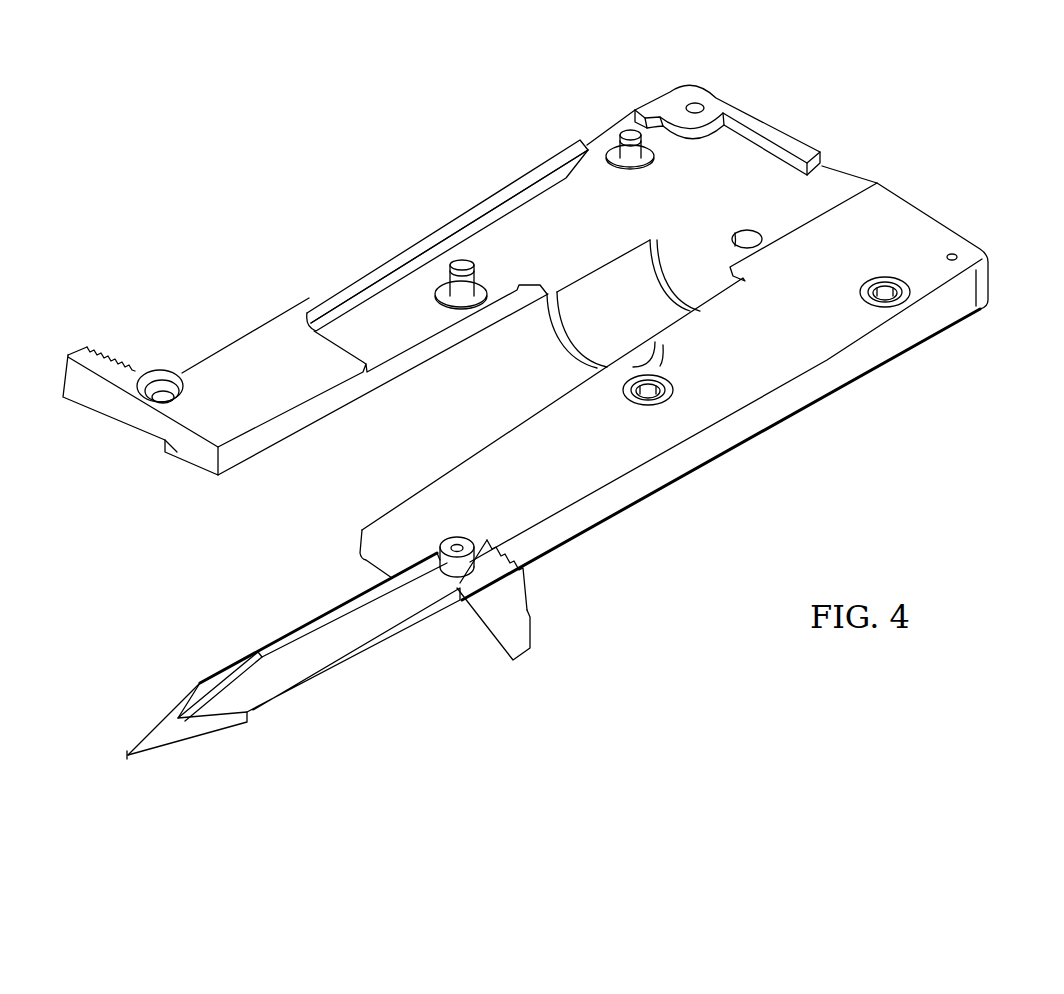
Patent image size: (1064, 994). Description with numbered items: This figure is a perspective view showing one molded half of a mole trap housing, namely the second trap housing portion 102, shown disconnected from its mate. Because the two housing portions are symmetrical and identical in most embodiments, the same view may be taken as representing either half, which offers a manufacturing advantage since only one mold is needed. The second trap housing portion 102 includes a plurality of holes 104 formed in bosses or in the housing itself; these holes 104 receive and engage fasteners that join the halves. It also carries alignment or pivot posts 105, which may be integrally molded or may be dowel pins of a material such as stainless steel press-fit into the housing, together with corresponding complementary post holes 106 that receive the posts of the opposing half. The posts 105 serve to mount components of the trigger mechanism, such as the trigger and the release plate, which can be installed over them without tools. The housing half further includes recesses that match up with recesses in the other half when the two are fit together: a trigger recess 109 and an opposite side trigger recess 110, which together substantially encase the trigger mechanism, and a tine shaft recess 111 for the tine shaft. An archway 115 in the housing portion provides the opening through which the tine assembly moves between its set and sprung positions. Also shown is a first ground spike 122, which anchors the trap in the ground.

The second trap housing portion 102 is at (765, 418).
The holes 104 is at (162, 393).
The alignment or pivot posts 105 is at (466, 284).
The post holes 106 is at (660, 391).
The trigger recess 109 is at (581, 220).
The side trigger recess 110 is at (616, 124).
The tine shaft recess 111 is at (853, 172).
The archway 115 is at (487, 357).
The first ground spike 122 is at (357, 635).